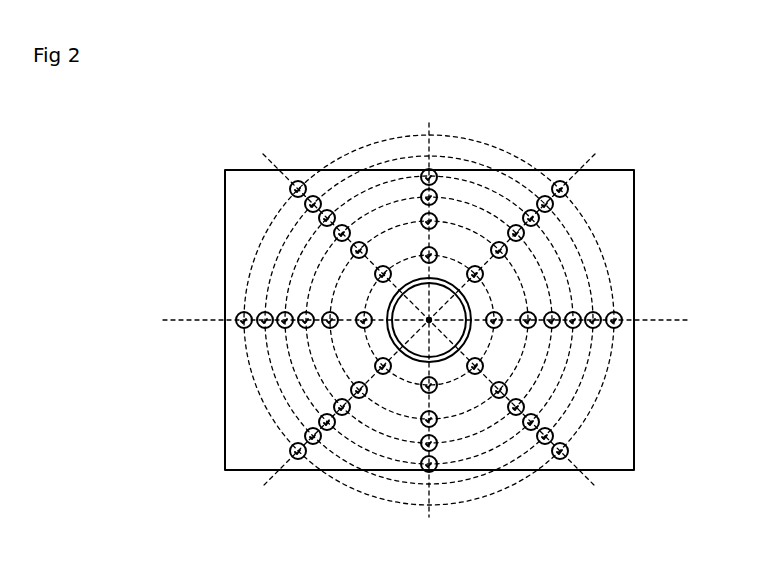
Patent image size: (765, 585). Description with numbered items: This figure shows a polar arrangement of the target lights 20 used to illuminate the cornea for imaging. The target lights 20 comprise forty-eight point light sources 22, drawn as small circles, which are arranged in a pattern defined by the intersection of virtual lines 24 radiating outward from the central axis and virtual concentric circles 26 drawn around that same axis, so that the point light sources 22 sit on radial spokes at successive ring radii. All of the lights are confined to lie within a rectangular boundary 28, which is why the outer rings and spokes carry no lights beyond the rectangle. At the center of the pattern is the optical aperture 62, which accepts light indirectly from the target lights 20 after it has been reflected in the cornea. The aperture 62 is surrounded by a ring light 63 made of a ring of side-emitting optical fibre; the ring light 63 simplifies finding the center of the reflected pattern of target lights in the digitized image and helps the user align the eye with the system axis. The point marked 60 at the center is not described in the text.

The target lights 20 is at (315, 148).
The point light sources 22 is at (557, 458).
The virtual lines 24 is at (587, 485).
The virtual concentric circles 26 is at (460, 507).
The rectangular boundary 28 is at (634, 383).
The center point 60 is at (432, 323).
The optical aperture 62 is at (387, 338).
The ring light 63 is at (443, 279).